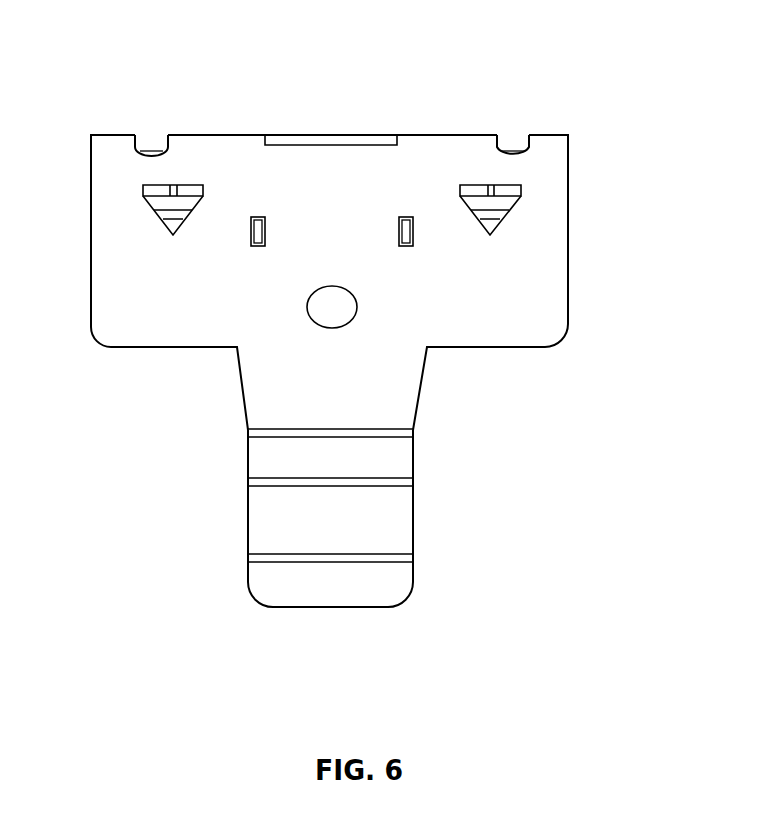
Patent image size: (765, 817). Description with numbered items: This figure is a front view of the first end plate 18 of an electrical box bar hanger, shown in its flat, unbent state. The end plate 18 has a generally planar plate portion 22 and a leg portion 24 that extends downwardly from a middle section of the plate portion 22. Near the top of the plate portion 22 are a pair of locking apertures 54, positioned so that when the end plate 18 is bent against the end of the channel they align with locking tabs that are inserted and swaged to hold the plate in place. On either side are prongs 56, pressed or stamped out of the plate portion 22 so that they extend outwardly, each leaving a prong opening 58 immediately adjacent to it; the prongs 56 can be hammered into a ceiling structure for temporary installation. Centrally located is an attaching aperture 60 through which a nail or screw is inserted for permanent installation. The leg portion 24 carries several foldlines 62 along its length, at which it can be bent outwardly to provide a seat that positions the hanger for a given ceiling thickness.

The first end plate 18 is at (375, 118).
The plate portion 22 is at (517, 297).
The leg portion 24 is at (397, 511).
The locking apertures 54 is at (258, 217).
The prongs 56 is at (143, 190).
The prong openings 58 is at (160, 218).
The attaching aperture 60 is at (333, 307).
The foldlines 62 is at (407, 433).